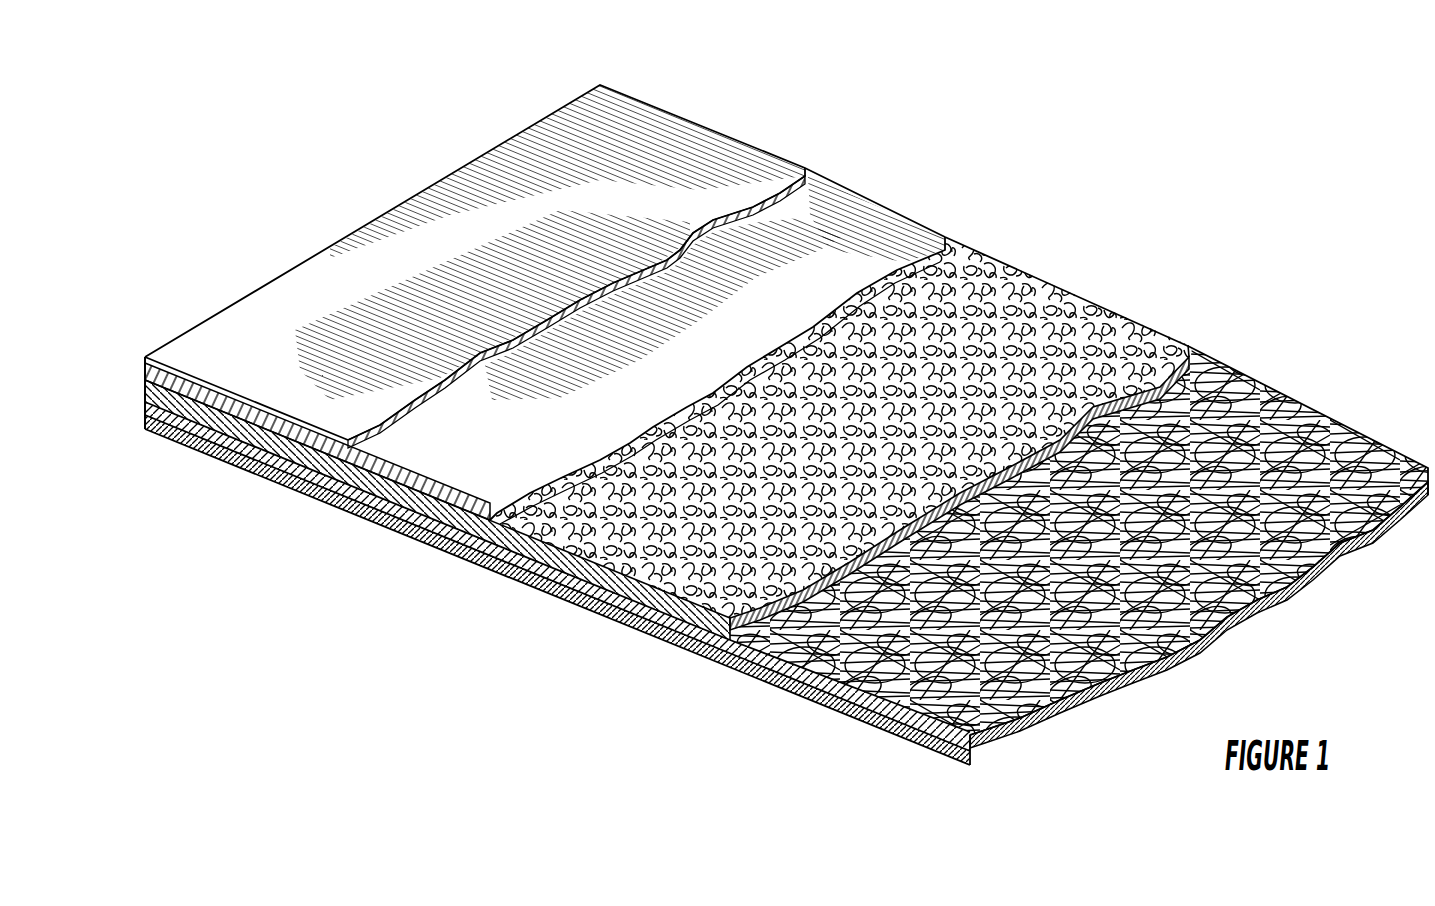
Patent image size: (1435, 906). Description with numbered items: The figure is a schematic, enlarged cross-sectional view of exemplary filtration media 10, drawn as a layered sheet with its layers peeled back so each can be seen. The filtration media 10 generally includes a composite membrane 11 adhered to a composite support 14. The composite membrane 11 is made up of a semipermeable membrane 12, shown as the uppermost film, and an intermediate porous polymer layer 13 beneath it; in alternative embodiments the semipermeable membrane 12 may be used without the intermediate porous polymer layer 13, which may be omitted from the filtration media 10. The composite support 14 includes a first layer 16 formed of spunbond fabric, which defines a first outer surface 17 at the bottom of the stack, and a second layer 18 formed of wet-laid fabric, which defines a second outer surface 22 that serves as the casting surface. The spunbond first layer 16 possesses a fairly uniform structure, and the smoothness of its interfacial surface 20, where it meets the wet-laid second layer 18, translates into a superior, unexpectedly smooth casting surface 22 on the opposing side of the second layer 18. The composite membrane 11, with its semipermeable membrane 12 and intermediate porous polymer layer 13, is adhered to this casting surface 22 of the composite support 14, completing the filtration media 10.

The filtration media 10 is at (1147, 118).
The composite membrane 11 is at (128, 388).
The semipermeable membrane 12 is at (712, 165).
The intermediate porous polymer layer 13 is at (885, 217).
The composite support 14 is at (970, 765).
The first layer 16 is at (1255, 416).
The first outer surface 17 is at (1000, 742).
The second layer 18 is at (1050, 297).
The interfacial surface 20 is at (493, 567).
The second outer surface 22 is at (418, 537).